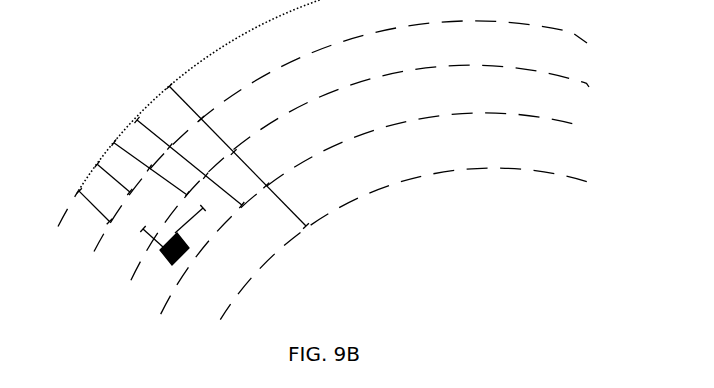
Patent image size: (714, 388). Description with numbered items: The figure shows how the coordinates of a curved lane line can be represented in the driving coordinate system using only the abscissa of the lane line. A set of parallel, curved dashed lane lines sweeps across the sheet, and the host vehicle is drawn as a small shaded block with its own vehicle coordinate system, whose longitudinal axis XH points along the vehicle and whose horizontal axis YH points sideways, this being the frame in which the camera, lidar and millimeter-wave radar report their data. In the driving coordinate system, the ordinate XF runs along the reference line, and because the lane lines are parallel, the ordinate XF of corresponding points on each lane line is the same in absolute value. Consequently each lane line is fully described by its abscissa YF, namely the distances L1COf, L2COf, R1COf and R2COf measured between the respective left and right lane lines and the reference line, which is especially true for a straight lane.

The ordinate of the driving coordinate system XF is at (203, 39).
The abscissa of the driving coordinate system YF is at (94, 208).
The longitudinal axis of the vehicle coordinate system XH is at (201, 215).
The horizontal axis of the vehicle coordinate system YH is at (143, 239).
The distance between first left lane line and reference line L1COf is at (151, 168).
The distance between second left lane line and reference line L2COf is at (110, 181).
The distance between first right lane line and reference line R1COf is at (190, 162).
The distance between second right lane line and reference line R2COf is at (237, 156).